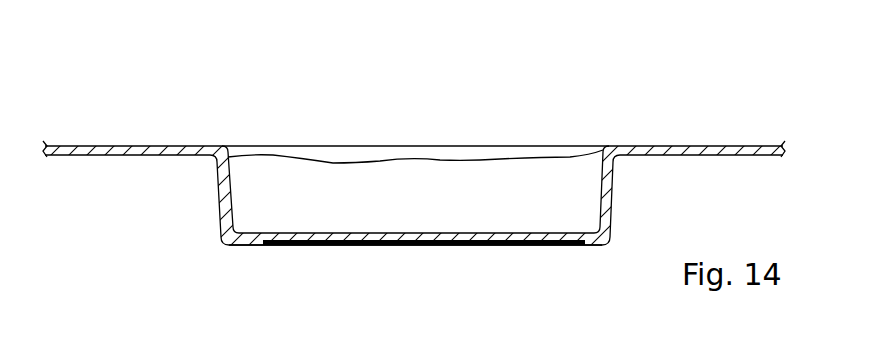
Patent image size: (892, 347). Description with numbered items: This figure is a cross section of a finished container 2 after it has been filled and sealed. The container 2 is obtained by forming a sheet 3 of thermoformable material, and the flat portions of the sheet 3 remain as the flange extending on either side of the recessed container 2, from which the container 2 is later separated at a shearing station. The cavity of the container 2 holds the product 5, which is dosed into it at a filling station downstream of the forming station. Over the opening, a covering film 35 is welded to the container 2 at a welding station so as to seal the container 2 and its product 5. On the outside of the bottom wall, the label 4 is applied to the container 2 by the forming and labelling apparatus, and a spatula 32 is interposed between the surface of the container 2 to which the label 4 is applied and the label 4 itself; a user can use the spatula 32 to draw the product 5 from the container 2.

The container 2 is at (283, 124).
The sheet 3 is at (708, 150).
The covering film 35 is at (484, 146).
The product 5 is at (429, 210).
The label 4 is at (300, 246).
The spatula 32 is at (372, 246).